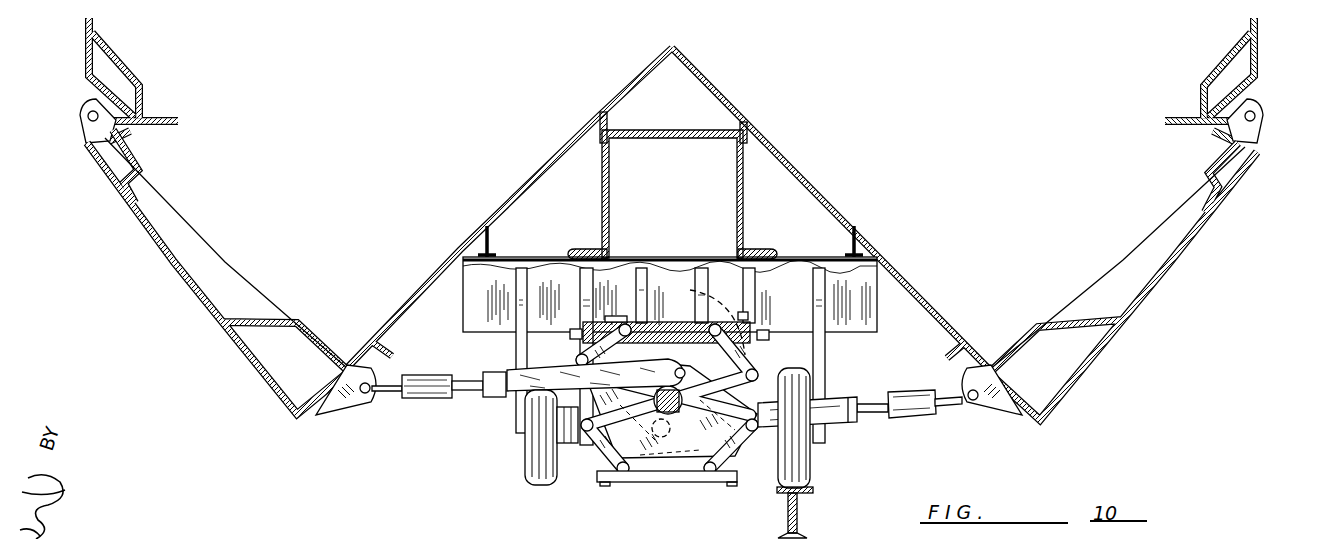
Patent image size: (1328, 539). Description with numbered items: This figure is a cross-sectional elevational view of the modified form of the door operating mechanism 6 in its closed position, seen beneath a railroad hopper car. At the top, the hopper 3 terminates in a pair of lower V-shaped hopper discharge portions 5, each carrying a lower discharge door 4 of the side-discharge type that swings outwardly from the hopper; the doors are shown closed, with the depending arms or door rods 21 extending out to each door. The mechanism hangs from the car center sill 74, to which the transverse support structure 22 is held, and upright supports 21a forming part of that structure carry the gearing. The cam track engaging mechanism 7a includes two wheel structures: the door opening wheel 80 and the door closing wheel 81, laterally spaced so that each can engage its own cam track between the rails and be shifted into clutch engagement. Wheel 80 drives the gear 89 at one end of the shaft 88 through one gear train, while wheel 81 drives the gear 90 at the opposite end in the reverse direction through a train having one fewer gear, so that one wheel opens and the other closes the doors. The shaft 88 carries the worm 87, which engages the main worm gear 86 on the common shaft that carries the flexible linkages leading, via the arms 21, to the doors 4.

The hopper 3 is at (418, 296).
The lower discharge door 4 is at (207, 305).
The lower V-shaped hopper discharge portion 5 is at (84, 60).
The door operating mechanism 6 is at (473, 408).
The cam track engaging mechanism 7a is at (665, 487).
The depending arm 21 is at (417, 400).
The upright support 21a is at (522, 284).
The transverse support structure 22 is at (853, 338).
The car center sill 74 is at (743, 185).
The door opening wheel 80 is at (523, 455).
The door closing wheel 81 is at (813, 447).
The main worm gear 86 is at (683, 438).
The worm 87 is at (663, 320).
The shaft 88 is at (707, 320).
The gear 89 is at (615, 318).
The gear 90 is at (742, 315).